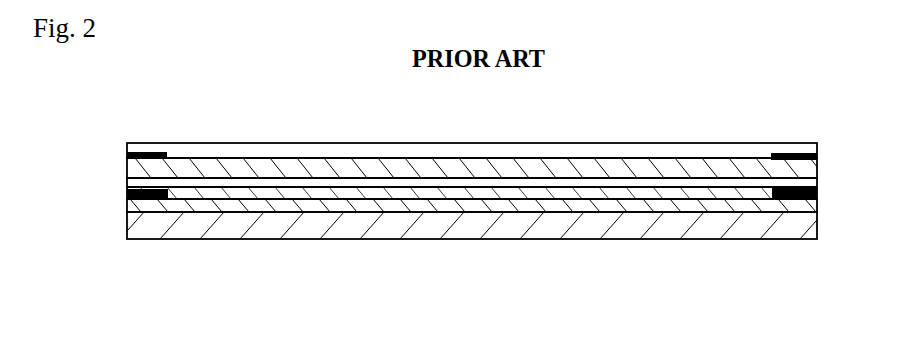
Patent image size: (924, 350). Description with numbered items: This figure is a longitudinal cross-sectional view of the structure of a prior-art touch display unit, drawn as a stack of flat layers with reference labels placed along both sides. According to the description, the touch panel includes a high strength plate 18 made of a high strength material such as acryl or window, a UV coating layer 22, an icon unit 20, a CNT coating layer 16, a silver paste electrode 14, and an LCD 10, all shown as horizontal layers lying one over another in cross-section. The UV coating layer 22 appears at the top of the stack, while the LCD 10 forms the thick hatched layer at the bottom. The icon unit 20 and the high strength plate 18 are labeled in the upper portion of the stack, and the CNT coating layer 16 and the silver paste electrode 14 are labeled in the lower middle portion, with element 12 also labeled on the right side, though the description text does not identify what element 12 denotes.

The LCD 10 is at (323, 238).
The lower electrode layer 12 is at (812, 208).
The silver paste electrode 14 is at (127, 197).
The CNT coating layer 16 is at (140, 181).
The high strength plate 18 is at (812, 167).
The icon unit 20 is at (127, 156).
The UV coating layer 22 is at (357, 147).